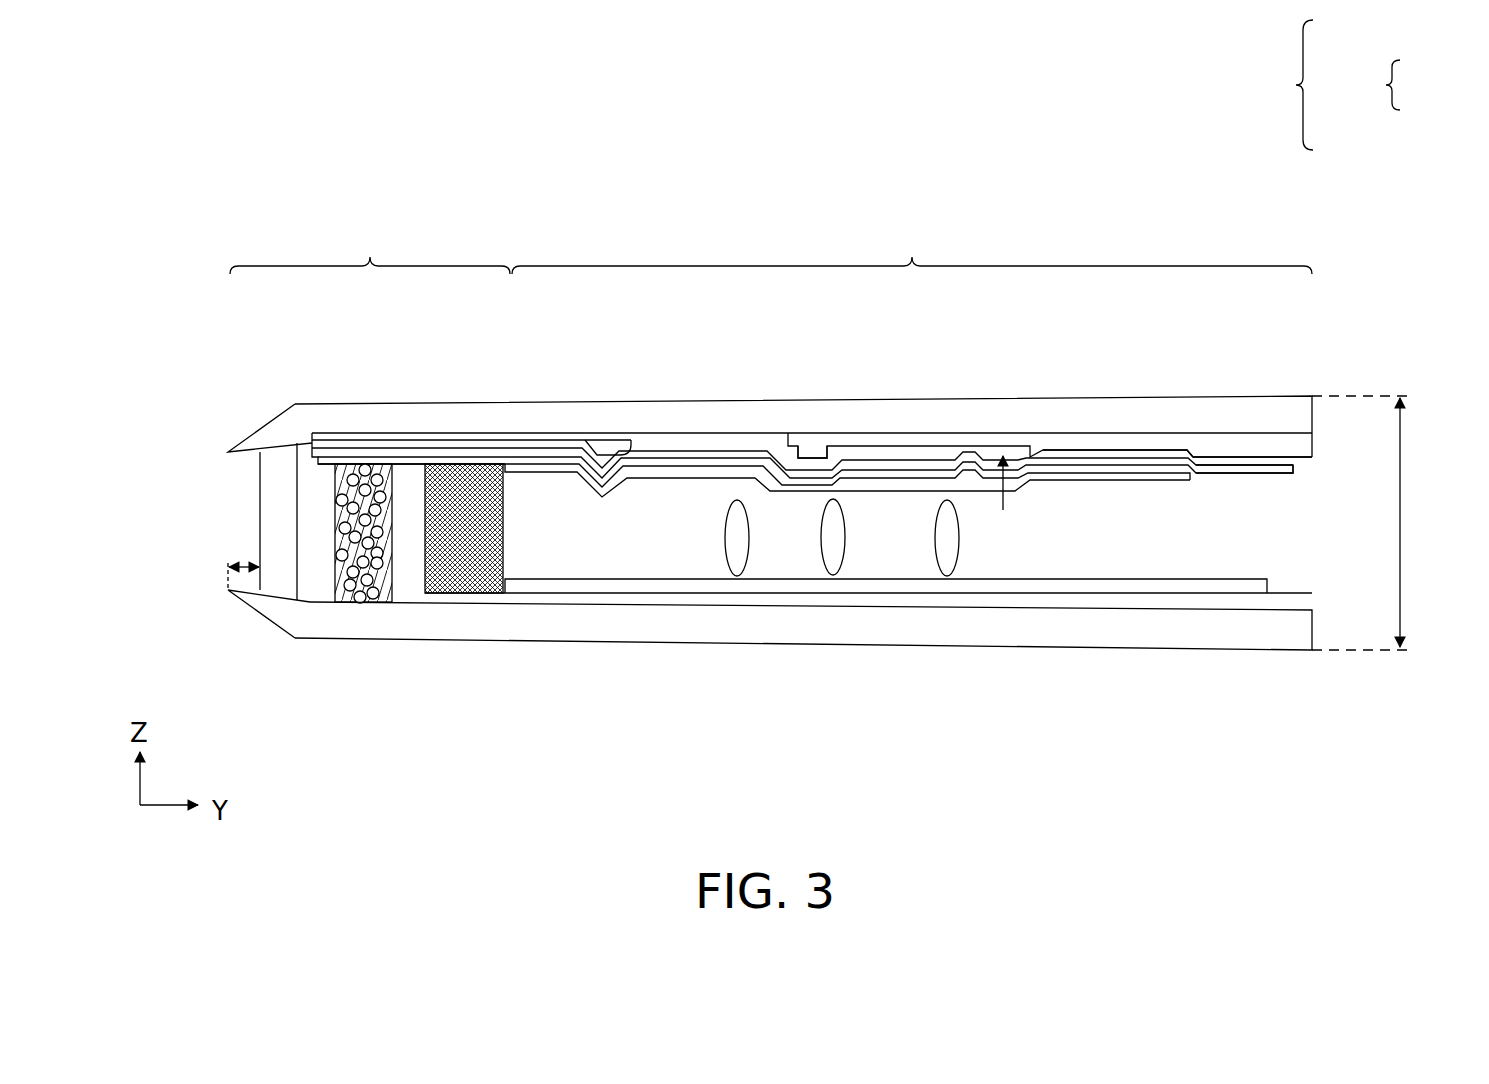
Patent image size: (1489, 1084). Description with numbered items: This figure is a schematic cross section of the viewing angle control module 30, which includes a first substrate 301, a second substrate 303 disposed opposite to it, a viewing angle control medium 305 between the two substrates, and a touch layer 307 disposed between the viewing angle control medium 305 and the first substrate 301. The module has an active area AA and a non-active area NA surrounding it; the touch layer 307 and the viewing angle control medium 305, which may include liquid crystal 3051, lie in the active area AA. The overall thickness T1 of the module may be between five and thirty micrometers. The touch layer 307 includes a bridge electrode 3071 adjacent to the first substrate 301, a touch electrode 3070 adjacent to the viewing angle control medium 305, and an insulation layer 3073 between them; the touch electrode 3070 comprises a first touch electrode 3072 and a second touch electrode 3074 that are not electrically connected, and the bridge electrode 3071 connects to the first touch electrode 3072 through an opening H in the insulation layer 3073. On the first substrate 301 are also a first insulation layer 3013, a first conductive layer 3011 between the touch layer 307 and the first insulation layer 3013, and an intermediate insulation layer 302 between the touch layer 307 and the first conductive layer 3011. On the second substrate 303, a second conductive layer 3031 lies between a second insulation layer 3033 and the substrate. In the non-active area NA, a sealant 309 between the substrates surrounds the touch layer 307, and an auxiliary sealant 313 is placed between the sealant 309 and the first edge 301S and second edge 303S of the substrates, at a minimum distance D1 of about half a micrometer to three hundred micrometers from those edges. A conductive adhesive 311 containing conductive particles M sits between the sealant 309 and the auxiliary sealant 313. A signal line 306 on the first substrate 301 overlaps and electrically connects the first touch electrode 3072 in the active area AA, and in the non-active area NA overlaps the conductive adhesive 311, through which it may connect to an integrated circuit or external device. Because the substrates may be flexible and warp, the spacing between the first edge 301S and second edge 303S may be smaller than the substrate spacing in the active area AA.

The viewing angle control module 30 is at (230, 172).
The first substrate 301 is at (405, 416).
The first edge 301S is at (228, 452).
The auxiliary sealant 313 is at (273, 483).
The minimum distance D1 is at (250, 562).
The second edge 303S is at (228, 590).
The conductive adhesive 311 is at (351, 606).
The conductive particles M is at (347, 598).
The sealant 309 is at (470, 565).
The second substrate 303 is at (590, 625).
The second conductive layer 3031 is at (1075, 605).
The second insulation layer 3033 is at (1170, 580).
The liquid crystal 3051 is at (737, 565).
The viewing angle control medium 305 is at (1039, 602).
The first insulation layer 3013 is at (1258, 468).
The first conductive layer 3011 is at (1300, 460).
The intermediate insulation layer 302 is at (1296, 458).
The opening H is at (1005, 498).
The insulation layer 3073 is at (600, 446).
The signal line 306 is at (617, 446).
The first touch electrode 3072 is at (812, 453).
The second touch electrode 3074 is at (918, 463).
The bridge electrode 3071 is at (985, 441).
The touch layer 307 is at (1359, 85).
The touch electrode 3070 is at (1397, 85).
The thickness T1 is at (1375, 523).
The non-active area NA is at (370, 250).
The active area AA is at (912, 250).